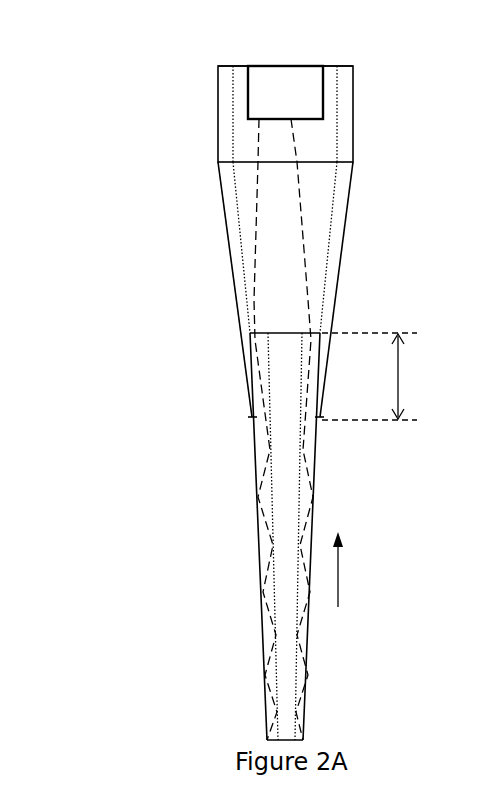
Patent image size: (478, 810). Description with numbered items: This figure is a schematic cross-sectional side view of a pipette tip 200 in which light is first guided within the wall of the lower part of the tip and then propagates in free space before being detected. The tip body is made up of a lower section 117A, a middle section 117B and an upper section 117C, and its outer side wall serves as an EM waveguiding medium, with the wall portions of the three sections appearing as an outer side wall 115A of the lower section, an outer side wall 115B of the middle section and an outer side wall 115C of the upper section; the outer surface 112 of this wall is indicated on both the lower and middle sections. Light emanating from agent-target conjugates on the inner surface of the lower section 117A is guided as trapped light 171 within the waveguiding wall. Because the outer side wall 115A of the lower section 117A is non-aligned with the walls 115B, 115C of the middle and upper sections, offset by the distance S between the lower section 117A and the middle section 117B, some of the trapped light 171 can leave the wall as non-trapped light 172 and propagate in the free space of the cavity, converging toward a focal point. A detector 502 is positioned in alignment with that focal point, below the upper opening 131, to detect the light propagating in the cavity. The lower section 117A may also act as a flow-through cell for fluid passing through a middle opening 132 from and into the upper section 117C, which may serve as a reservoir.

The pipette tip 200 is at (128, 147).
The upper opening 131 is at (246, 65).
The detector 502 is at (317, 83).
The outer side wall of upper section 115C is at (231, 137).
The upper section 117C is at (362, 67).
The non-trapped light 172 is at (260, 187).
The outer side wall of middle section 115B is at (238, 252).
The middle section 117B is at (362, 167).
The middle opening 132 is at (288, 337).
The outer surface 112 is at (250, 398).
The lower section 117A is at (338, 337).
The trapped light 171 is at (268, 640).
The outer side wall of lower section 115A is at (270, 715).